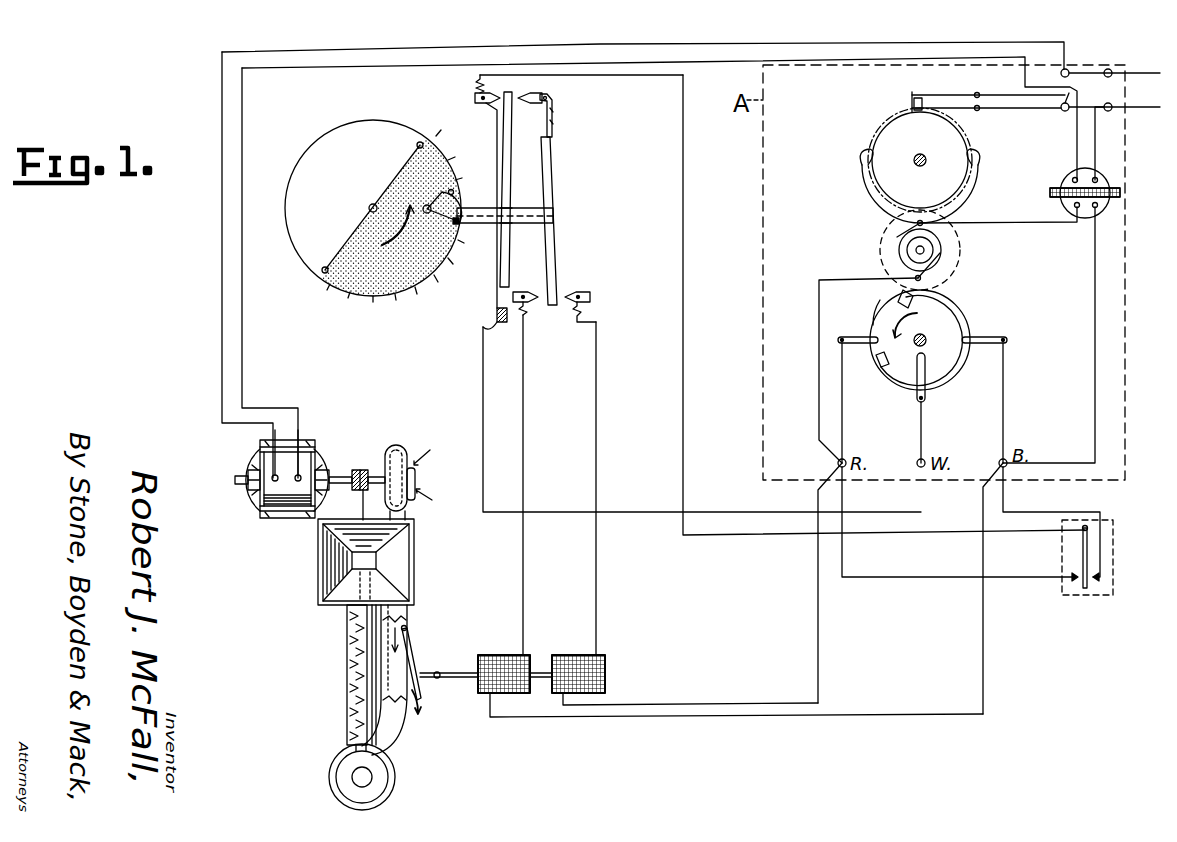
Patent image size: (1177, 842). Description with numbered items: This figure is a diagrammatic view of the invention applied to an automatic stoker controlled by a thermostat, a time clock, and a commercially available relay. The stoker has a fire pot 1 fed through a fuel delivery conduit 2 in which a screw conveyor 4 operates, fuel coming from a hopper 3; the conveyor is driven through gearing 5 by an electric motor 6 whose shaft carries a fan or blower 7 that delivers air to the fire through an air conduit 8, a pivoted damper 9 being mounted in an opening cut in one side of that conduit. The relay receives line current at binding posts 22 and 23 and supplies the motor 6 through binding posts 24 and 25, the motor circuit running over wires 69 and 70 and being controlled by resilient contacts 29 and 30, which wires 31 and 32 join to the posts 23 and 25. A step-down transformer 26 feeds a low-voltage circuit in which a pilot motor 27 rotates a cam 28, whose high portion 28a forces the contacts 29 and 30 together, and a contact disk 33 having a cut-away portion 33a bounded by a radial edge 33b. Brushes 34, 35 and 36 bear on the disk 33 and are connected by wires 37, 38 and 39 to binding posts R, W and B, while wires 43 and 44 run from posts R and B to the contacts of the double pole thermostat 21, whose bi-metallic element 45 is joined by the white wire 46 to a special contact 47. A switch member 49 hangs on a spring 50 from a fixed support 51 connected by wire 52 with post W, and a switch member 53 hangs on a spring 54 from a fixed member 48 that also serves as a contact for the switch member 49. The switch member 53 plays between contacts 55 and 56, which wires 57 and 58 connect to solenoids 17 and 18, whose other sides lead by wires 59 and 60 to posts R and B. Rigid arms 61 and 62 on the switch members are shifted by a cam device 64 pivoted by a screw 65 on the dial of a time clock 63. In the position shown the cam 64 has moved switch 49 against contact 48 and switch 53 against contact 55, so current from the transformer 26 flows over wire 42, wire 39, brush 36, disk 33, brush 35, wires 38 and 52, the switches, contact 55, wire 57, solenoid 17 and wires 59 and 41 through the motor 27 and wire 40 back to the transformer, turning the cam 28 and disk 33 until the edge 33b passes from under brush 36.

The fire pot 1 is at (395, 780).
The fuel delivery conduit 2 is at (347, 700).
The hopper 3 is at (412, 572).
The screw conveyor 4 is at (380, 560).
The gearing 5 is at (360, 470).
The electric motor 6 is at (256, 505).
The fan or blower 7 is at (410, 460).
The air conduit 8 is at (400, 735).
The pivoted damper 9 is at (414, 662).
The solenoid 17 is at (578, 655).
The solenoid 18 is at (502, 655).
The double pole thermostat 21 is at (1115, 560).
The binding post 22 is at (1112, 70).
The binding post 23 is at (1112, 110).
The binding post 24 is at (1068, 69).
The binding post 25 is at (1064, 111).
The step-down transformer 26 is at (1068, 174).
The pilot motor 27 is at (944, 244).
The cam 28 is at (886, 132).
The high portion of cam 28a is at (866, 194).
The resilient contact 29 is at (935, 95).
The resilient contact 30 is at (963, 98).
The wire 31 is at (1002, 95).
The wire 32 is at (1019, 110).
The contact disk 33 is at (962, 308).
The cut away portion 33a is at (896, 300).
The radial edge of notch 33b is at (880, 360).
The brush 34 is at (858, 337).
The brush 35 is at (926, 372).
The brush 36 is at (991, 337).
The wire 37 is at (845, 423).
The wire 38 is at (923, 432).
The wire 39 is at (1005, 422).
The wire 40 is at (1009, 220).
The wire 41 is at (819, 376).
The wire 42 is at (1094, 293).
The wire 43 is at (917, 577).
The wire 44 is at (1081, 512).
The bi-metallic element 45 is at (1080, 549).
The third wire 46 is at (684, 410).
The special contact 47 is at (483, 103).
The fixed member 48 is at (530, 104).
The switch member 49 is at (508, 153).
The resilient strip or spring 50 is at (497, 296).
The fixed support 51 is at (502, 324).
The wire 52 is at (484, 412).
The switch member 53 is at (554, 172).
The resilient strip or spring 54 is at (553, 128).
The contact 55 is at (579, 292).
The contact 56 is at (526, 292).
The wire 57 is at (597, 425).
The wire 58 is at (525, 456).
The wire 59 is at (722, 703).
The wire 60 is at (925, 713).
The rigid arm 61 is at (487, 208).
The rigid arm 62 is at (527, 223).
The time clock 63 is at (400, 138).
The cam device 64 is at (456, 224).
The screw 65 is at (458, 226).
The wire 69 is at (763, 44).
The wire 70 is at (245, 145).